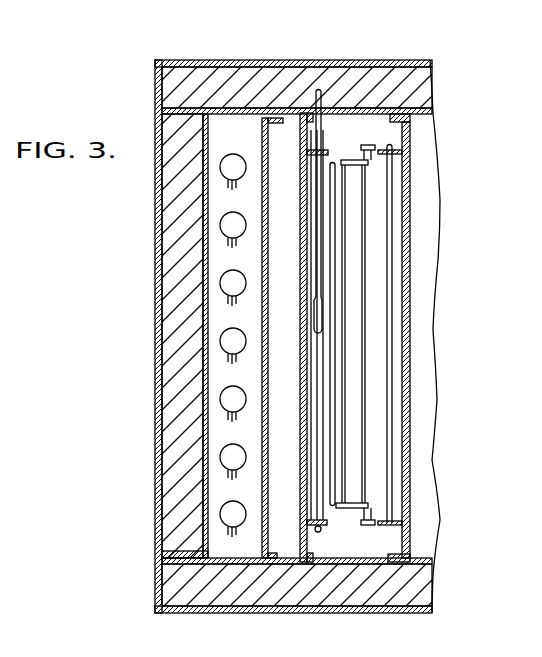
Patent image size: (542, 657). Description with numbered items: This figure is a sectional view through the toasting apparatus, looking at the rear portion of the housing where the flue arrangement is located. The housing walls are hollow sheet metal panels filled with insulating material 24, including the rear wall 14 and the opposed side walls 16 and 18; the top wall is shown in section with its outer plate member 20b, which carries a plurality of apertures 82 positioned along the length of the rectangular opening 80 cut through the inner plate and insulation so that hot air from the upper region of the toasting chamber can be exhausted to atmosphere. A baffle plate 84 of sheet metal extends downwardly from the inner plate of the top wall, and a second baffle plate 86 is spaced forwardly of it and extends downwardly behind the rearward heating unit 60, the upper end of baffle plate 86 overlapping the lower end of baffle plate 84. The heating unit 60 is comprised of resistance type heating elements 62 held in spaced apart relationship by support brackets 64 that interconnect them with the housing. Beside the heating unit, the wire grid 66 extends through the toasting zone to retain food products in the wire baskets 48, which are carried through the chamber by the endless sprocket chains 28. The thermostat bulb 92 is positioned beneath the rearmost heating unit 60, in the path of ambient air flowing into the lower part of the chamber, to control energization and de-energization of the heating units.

The rear wall 14 is at (155, 511).
The side wall 16 is at (243, 61).
The side wall 18 is at (226, 613).
The outer plate member 20b is at (224, 197).
The insulating material 24 is at (357, 75).
The endless sprocket chains 28 is at (375, 140).
The wire baskets 48 is at (370, 245).
The heating unit 60 is at (416, 353).
The heating elements 62 is at (407, 333).
The support brackets 64 is at (312, 230).
The wire grid 66 is at (335, 481).
The rectangular opening 80 is at (208, 372).
The apertures 82 is at (217, 287).
The baffle plate 84 is at (262, 311).
The second baffle plate 86 is at (238, 534).
The thermostat bulb 92 is at (322, 310).